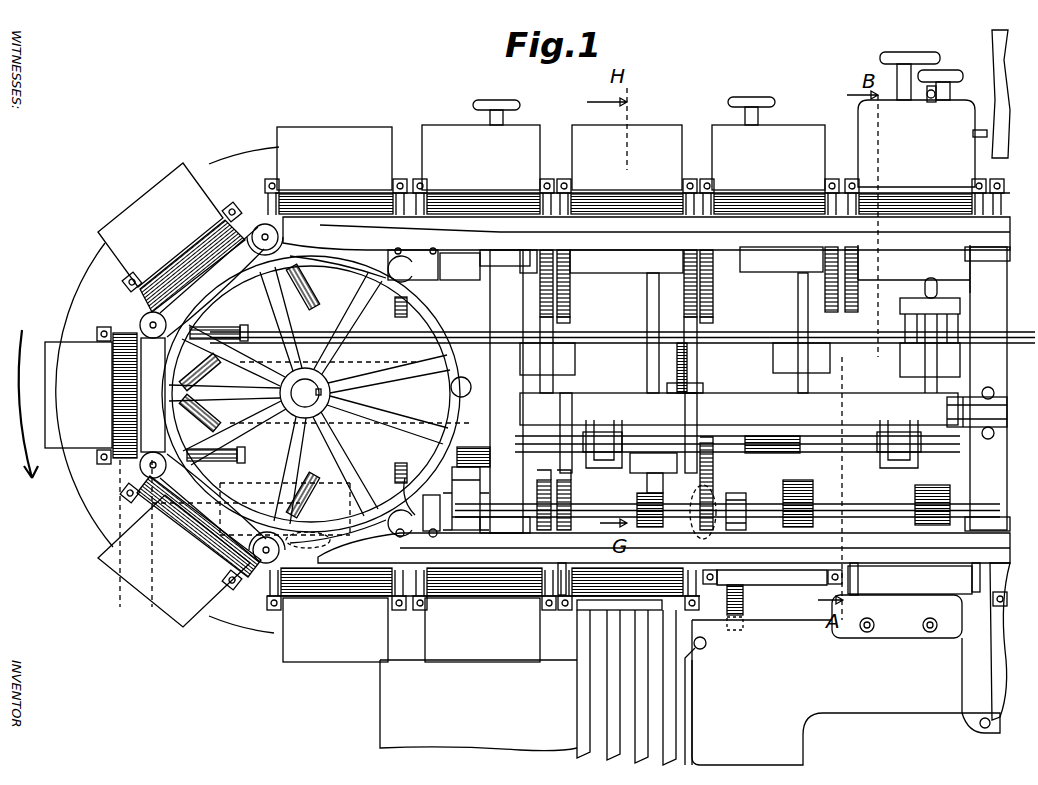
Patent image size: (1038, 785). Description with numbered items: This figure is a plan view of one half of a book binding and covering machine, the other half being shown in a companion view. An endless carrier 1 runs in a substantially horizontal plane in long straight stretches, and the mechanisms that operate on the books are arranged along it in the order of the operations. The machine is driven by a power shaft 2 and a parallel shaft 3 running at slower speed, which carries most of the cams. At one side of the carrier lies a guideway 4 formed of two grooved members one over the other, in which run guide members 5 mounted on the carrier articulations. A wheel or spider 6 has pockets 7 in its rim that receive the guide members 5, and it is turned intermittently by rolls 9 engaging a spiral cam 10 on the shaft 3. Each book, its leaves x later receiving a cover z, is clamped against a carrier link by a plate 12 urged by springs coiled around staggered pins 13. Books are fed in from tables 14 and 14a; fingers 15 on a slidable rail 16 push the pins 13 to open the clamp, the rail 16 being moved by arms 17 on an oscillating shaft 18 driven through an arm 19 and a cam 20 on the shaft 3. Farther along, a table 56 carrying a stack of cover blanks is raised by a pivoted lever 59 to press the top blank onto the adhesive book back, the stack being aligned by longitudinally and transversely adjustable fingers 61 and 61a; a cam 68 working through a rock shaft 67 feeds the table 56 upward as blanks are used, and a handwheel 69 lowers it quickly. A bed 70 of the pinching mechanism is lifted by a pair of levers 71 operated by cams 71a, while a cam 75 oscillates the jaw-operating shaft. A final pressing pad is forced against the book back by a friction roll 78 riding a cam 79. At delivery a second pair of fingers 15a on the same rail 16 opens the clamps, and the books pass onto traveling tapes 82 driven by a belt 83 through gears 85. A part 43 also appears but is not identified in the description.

The endless carrier 1 is at (148, 325).
The power shaft 2 is at (737, 331).
The shaft 3 is at (593, 505).
The guideway 4 is at (945, 233).
The guide members 5 is at (140, 323).
The wheel or spider 6 is at (432, 318).
The pockets or depressions 7 is at (242, 318).
The rolls 9 is at (216, 465).
The spiral cam 10 is at (295, 547).
The plate 12 is at (907, 180).
The pins 13 is at (565, 580).
The table 14 is at (900, 634).
The table 14a is at (890, 578).
The fingers 15 is at (843, 435).
The pair of fingers 15a is at (572, 420).
The slidable rail 16 is at (752, 388).
The arms 17 is at (747, 459).
The shaft 18 is at (760, 453).
The arm 19 is at (480, 450).
The cam 20 is at (467, 492).
The strip 43 is at (1003, 80).
The table 56 is at (858, 106).
The pivoted lever 59 is at (930, 386).
The longitudinally adjustable fingers 61 is at (973, 133).
The transversely adjustable fingers 61a is at (928, 104).
The transverse rock shaft 67 is at (688, 375).
The cam 68 is at (698, 530).
The handwheel 69 is at (942, 53).
The bed 70 is at (540, 125).
The pair of levers 71 is at (553, 328).
The pair of cams 71a is at (668, 497).
The cam 75 is at (497, 101).
The friction roll 78 is at (418, 528).
The cam 79 is at (440, 493).
The traveling tapes 82 is at (636, 705).
The belt 83 is at (740, 500).
The gears 85 is at (743, 598).
The leaves x is at (275, 200).
The cover z is at (321, 394).